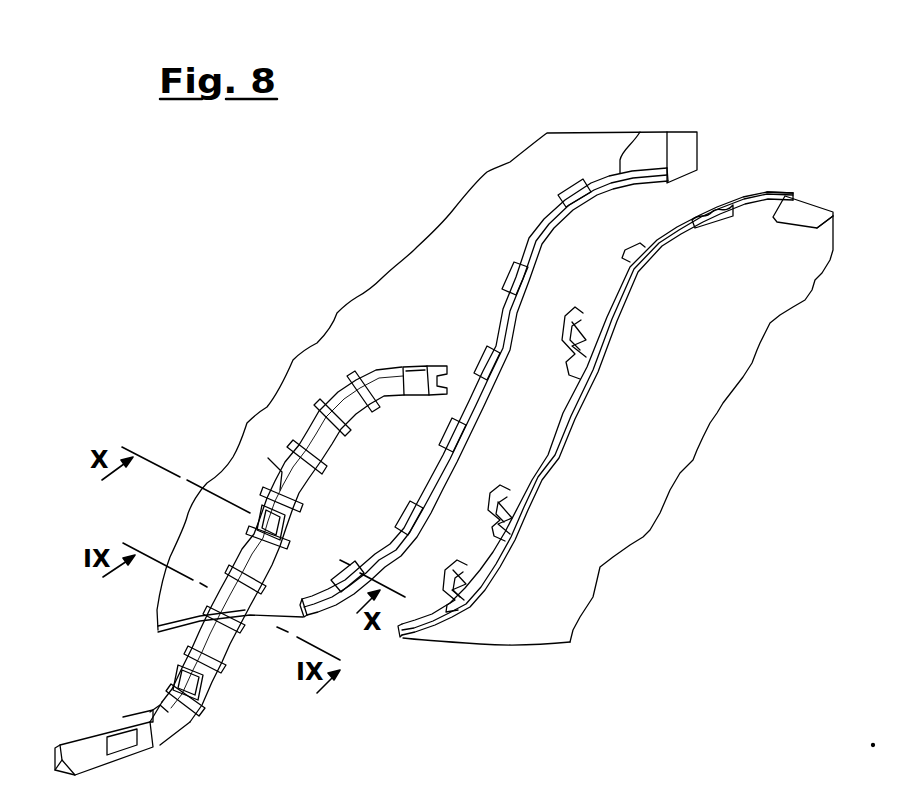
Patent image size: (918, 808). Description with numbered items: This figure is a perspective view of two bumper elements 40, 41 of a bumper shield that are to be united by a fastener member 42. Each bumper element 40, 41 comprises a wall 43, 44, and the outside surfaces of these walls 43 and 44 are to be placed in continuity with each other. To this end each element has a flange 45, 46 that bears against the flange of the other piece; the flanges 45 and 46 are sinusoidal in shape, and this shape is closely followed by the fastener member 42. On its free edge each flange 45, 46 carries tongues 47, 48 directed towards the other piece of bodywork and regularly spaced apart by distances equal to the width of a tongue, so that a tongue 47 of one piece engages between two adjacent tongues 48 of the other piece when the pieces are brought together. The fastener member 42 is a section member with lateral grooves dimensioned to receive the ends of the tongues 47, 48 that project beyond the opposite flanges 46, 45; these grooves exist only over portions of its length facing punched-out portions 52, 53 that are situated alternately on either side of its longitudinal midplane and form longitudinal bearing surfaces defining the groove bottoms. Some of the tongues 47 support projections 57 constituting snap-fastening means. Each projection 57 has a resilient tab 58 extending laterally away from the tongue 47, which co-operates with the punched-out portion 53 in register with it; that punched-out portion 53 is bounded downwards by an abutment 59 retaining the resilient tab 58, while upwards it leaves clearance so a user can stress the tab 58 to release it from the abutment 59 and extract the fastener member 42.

The bumper element 40 is at (587, 108).
The bumper element 41 is at (792, 172).
The fastener member 42 is at (150, 658).
The wall 43 is at (485, 208).
The wall 44 is at (718, 330).
The flange 45 is at (637, 132).
The flange 46 is at (760, 190).
The tongue 47 is at (623, 263).
The tongue 48 is at (567, 200).
The punched-out portion 52 is at (307, 427).
The punched-out portion 53 is at (262, 514).
The projection 57 is at (573, 317).
The resilient tab 58 is at (712, 224).
The abutment 59 is at (257, 510).